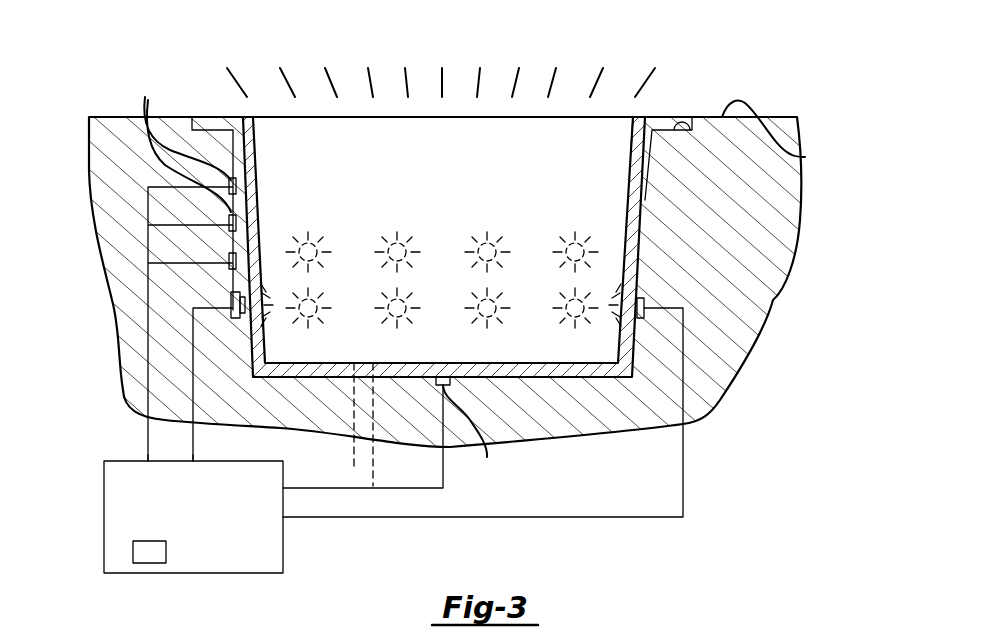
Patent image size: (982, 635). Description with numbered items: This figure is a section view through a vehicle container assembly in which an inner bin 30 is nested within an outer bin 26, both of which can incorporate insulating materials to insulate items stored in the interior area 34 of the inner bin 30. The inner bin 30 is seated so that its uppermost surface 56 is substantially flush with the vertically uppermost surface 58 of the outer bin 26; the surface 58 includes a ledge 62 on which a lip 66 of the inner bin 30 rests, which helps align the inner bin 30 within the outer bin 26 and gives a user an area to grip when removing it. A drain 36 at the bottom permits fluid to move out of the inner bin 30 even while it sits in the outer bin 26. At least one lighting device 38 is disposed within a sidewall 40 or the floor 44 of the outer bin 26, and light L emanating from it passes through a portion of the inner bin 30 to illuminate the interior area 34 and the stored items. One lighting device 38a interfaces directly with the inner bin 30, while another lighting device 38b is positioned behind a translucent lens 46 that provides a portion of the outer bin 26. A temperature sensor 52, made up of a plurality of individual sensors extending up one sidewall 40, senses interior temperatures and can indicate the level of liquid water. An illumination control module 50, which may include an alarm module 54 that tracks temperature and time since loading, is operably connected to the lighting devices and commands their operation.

The outer bin 26 is at (640, 252).
The inner bin 30 is at (618, 142).
The interior area 34 is at (290, 146).
The drain 36 is at (353, 468).
The lighting device 38 is at (486, 245).
The lighting device 38a is at (644, 308).
The lighting device 38b is at (233, 305).
The sidewall 40 is at (610, 362).
The floor 44 is at (326, 372).
The lens 46 is at (245, 332).
The illumination control module 50 is at (236, 557).
The temperature sensor 52 is at (315, 280).
The alarm module 54 is at (133, 552).
The uppermost surface 56 is at (690, 116).
The uppermost surface 58 is at (805, 157).
The ledge 62 is at (691, 131).
The lip 66 is at (672, 117).
The light L is at (517, 83).